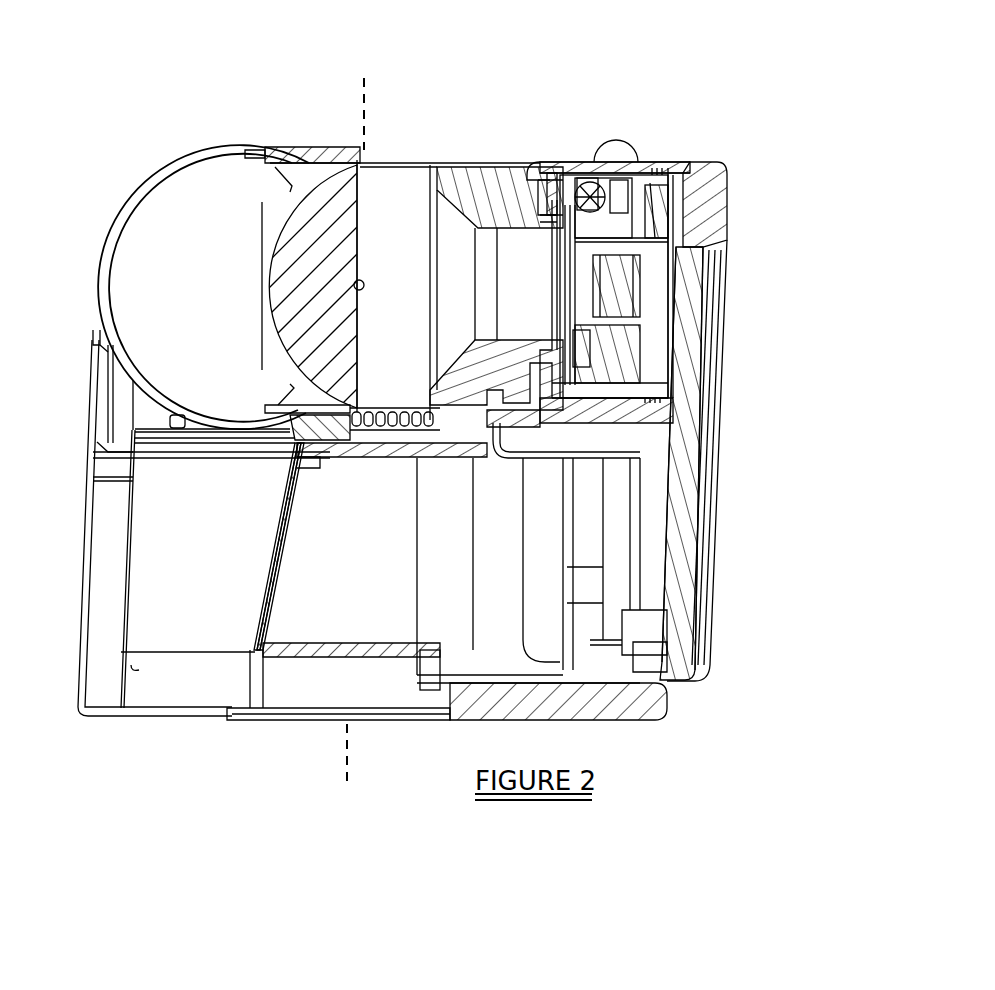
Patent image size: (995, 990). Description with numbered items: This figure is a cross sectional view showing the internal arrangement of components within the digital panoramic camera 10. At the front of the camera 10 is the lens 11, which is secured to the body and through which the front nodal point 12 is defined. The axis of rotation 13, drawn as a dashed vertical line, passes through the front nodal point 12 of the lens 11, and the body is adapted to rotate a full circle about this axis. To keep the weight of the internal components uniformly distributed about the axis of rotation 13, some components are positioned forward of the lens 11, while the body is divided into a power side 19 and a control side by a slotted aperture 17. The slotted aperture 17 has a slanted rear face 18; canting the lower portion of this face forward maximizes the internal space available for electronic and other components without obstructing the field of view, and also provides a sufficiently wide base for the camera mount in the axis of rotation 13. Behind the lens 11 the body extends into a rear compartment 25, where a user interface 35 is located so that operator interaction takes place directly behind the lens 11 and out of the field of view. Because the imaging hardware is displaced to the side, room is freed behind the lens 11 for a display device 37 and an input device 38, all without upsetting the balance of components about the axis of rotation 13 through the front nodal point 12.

The digital panoramic camera 10 is at (655, 80).
The lens 11 is at (292, 270).
The front nodal point 12 is at (364, 284).
The axis of rotation 13 is at (378, 102).
The slotted aperture 17 is at (212, 628).
The slanted rear face 18 is at (272, 512).
The power side 19 is at (150, 512).
The rear compartment 25 is at (722, 156).
The user interface 35 is at (733, 432).
The display device 37 is at (735, 500).
The input device 38 is at (742, 498).